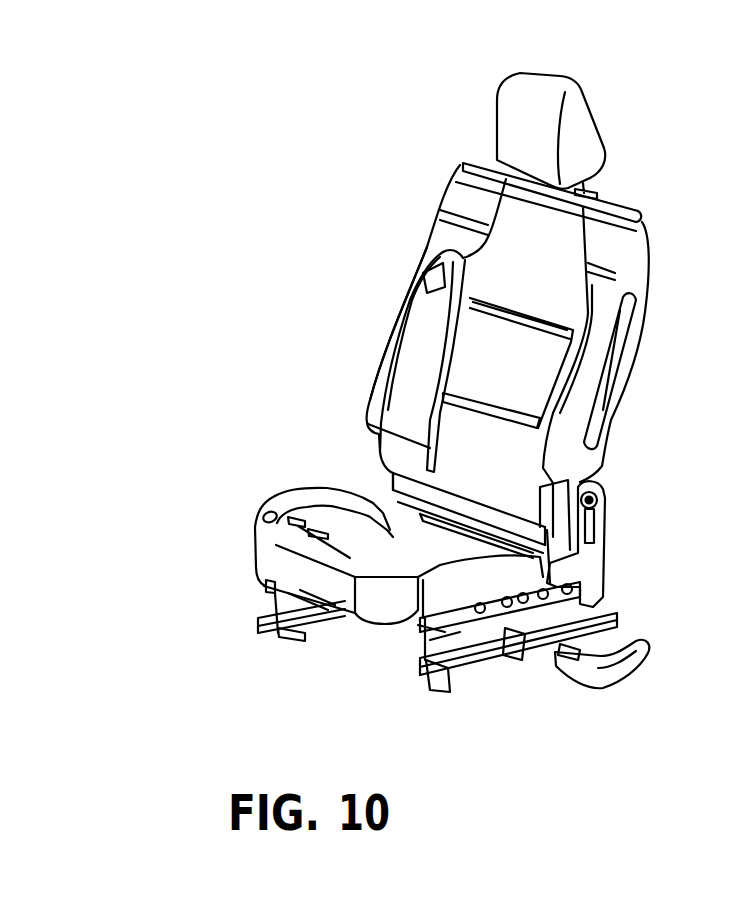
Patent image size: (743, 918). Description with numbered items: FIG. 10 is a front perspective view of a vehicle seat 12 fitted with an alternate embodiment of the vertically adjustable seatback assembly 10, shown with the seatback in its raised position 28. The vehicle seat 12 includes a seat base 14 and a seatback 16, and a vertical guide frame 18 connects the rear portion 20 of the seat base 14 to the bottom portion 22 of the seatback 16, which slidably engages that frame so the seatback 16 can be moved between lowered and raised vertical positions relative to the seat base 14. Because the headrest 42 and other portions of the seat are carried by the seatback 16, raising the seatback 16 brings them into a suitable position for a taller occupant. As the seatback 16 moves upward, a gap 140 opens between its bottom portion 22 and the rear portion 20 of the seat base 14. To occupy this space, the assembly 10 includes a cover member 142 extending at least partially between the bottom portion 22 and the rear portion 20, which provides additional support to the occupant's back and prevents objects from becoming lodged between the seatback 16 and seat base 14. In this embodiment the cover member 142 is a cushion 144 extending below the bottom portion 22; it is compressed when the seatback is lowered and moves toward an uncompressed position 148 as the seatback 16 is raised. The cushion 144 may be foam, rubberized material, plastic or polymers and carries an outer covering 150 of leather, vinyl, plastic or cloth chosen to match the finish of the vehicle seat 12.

The vertically adjustable seatback assembly 10 is at (413, 177).
The vehicle seat 12 is at (347, 253).
The seat base 14 is at (273, 537).
The seatback 16 is at (627, 193).
The vertical guide frame 18 is at (610, 573).
The rear portion of the seat base 20 is at (480, 540).
The bottom portion of the seatback 22 is at (460, 478).
The raised position 28 is at (358, 358).
The headrest 42 is at (548, 93).
The gap 140 is at (590, 482).
The cover member 142 is at (555, 537).
The cushion 144 is at (413, 490).
The uncompressed position 148 is at (500, 497).
The outer covering 150 is at (473, 507).